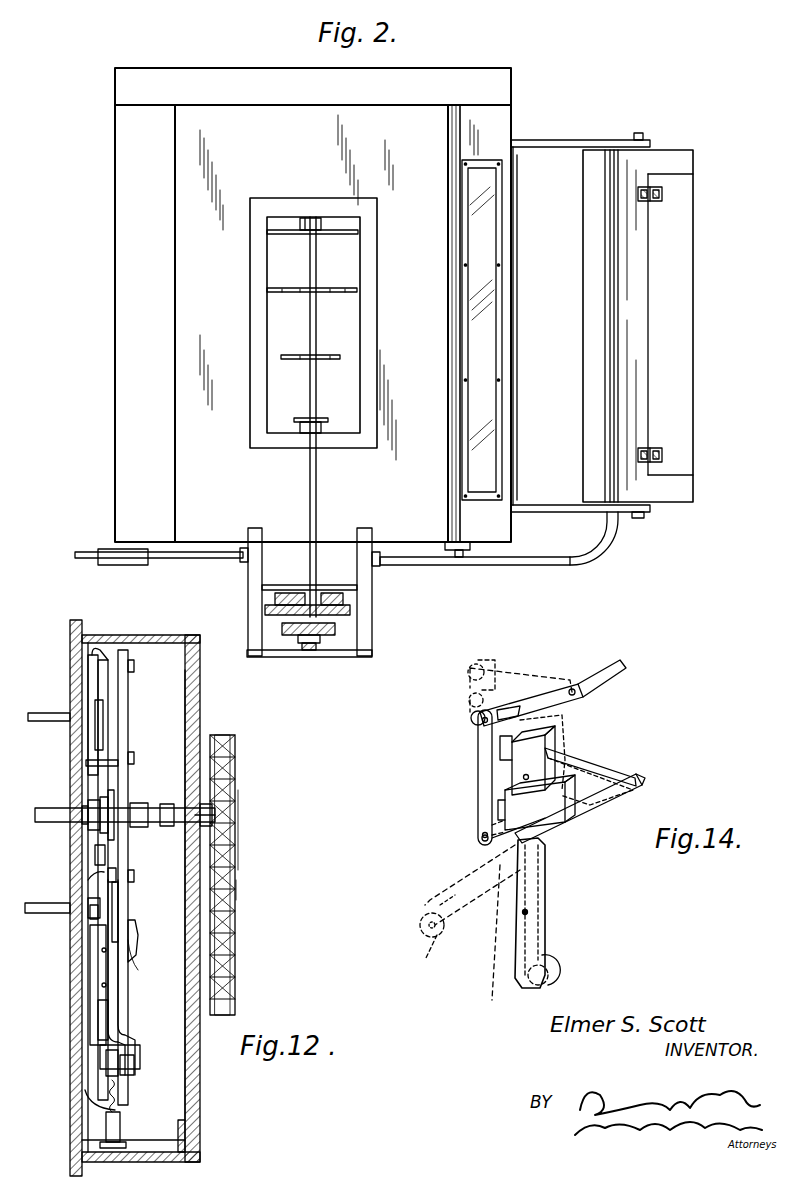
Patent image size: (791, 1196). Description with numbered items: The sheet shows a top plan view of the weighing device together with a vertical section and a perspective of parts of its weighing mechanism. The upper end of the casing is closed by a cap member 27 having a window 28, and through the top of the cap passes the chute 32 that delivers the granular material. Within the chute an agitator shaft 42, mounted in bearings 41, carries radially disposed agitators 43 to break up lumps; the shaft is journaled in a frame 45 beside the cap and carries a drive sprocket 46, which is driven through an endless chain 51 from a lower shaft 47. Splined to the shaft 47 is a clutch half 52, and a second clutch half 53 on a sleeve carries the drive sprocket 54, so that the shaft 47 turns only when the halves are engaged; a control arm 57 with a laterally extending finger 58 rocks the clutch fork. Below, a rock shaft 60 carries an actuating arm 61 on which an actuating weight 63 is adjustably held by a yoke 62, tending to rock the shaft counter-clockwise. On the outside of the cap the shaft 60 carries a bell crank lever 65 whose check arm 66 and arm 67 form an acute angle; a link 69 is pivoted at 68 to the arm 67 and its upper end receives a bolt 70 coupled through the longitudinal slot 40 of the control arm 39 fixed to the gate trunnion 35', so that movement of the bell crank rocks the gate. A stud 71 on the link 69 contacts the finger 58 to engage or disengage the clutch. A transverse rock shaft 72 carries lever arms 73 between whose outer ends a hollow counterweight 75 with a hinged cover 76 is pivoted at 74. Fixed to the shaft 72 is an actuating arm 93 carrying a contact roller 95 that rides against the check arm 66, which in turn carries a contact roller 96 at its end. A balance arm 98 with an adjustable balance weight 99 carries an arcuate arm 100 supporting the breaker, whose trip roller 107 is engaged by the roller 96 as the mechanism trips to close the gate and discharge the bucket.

In FIG. 2, the cap member 27 is at (128, 181).
In FIG. 12, the cap member 27 is at (70, 790).
In FIG. 2, the window 28 is at (485, 305).
In FIG. 2, the chute 32 is at (278, 261).
In FIG. 2, the bearings 41 is at (308, 226).
In FIG. 2, the agitator shaft 42 is at (309, 390).
In FIG. 2, the agitators 43 is at (293, 300).
In FIG. 2, the frame 45 is at (338, 657).
In FIG. 2, the drive sprocket 46 is at (300, 640).
In FIG. 12, the shaft 47 is at (50, 825).
In FIG. 2, the endless chain 51 is at (338, 630).
In FIG. 12, the clutch half 52 is at (86, 810).
In FIG. 12, the clutch half 53 is at (112, 826).
In FIG. 2, the drive sprocket 54 is at (283, 595).
In FIG. 12, the drive sprocket 54 is at (224, 800).
In FIG. 12, the control arm 57 is at (92, 895).
In FIG. 12, the finger 58 is at (96, 870).
In FIG. 12, the rock shaft 60 is at (48, 914).
In FIG. 14, the rock shaft 60 is at (600, 812).
In FIG. 14, the actuating arm 61 is at (585, 742).
In FIG. 14, the yoke 62 is at (548, 732).
In FIG. 14, the actuating weight 63 is at (565, 818).
In FIG. 14, the bell crank lever 65 is at (558, 890).
In FIG. 12, the check arm 66 is at (122, 962).
In FIG. 14, the check arm 66 is at (530, 914).
In FIG. 12, the arm 67 is at (116, 926).
In FIG. 14, the arm 67 is at (478, 822).
In FIG. 12, the pivot 68 is at (122, 888).
In FIG. 14, the pivot 68 is at (480, 840).
In FIG. 12, the link 69 is at (126, 764).
In FIG. 14, the link 69 is at (478, 776).
In FIG. 14, the bolt 70 is at (472, 721).
In FIG. 12, the stud 71 is at (98, 783).
In FIG. 2, the rock shaft 72 is at (455, 566).
In FIG. 2, the lever arms 73 is at (556, 148).
In FIG. 2, the pivot 74 is at (641, 133).
In FIG. 2, the counterweight 75 is at (582, 328).
In FIG. 2, the hinged cover 76 is at (680, 292).
In FIG. 2, the actuating arm 93 is at (549, 567).
In FIG. 12, the actuating arm 93 is at (130, 960).
In FIG. 12, the contact roller 95 is at (100, 960).
In FIG. 12, the contact roller 96 is at (100, 998).
In FIG. 14, the contact roller 96 is at (432, 940).
In FIG. 2, the balance arm 98 is at (187, 559).
In FIG. 2, the balance weight 99 is at (120, 566).
In FIG. 12, the arcuate arm 100 is at (114, 1018).
In FIG. 12, the trip roller 107 is at (100, 1062).
In FIG. 12, the trunnion 35' is at (48, 702).
In FIG. 14, the trunnion 35' is at (602, 664).
In FIG. 12, the control arm 39 is at (108, 712).
In FIG. 14, the control arm 39 is at (505, 668).
In FIG. 14, the longitudinal slot 40 is at (508, 708).